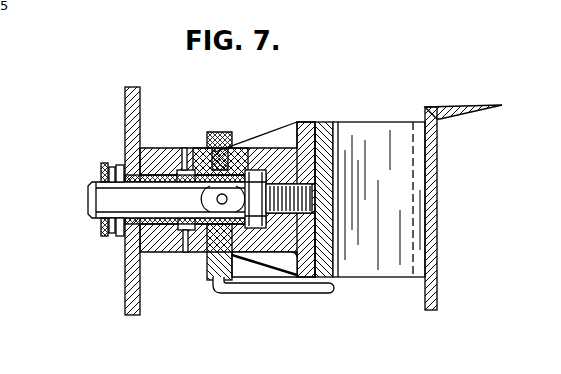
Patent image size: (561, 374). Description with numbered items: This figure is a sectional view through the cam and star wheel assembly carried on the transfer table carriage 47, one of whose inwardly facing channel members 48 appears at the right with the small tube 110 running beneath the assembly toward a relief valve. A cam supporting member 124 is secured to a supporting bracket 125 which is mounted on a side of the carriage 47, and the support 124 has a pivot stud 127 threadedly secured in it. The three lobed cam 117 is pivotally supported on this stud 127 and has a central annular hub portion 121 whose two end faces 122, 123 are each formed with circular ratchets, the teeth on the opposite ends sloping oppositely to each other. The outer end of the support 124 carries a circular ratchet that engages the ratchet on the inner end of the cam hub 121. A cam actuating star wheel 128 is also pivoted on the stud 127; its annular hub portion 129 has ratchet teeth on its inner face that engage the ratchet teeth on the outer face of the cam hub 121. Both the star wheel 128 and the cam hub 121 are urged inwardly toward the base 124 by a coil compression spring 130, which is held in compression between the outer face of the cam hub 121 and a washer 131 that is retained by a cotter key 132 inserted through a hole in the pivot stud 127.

The carriage 47 is at (499, 105).
The channel member 48 is at (427, 109).
The small tube 110 is at (302, 291).
The cam 117 is at (207, 130).
The central annular hub portion 121 is at (224, 152).
The end face 122 is at (187, 255).
The end face 123 is at (259, 229).
The cam supporting member 124 is at (302, 149).
The supporting bracket 125 is at (403, 228).
The pivot stud 127 is at (137, 176).
The cam actuating star wheel 128 is at (131, 119).
The annular hub portion 129 is at (162, 253).
The coil compression spring 130 is at (116, 242).
The washer 131 is at (108, 236).
The cotter key 132 is at (98, 172).